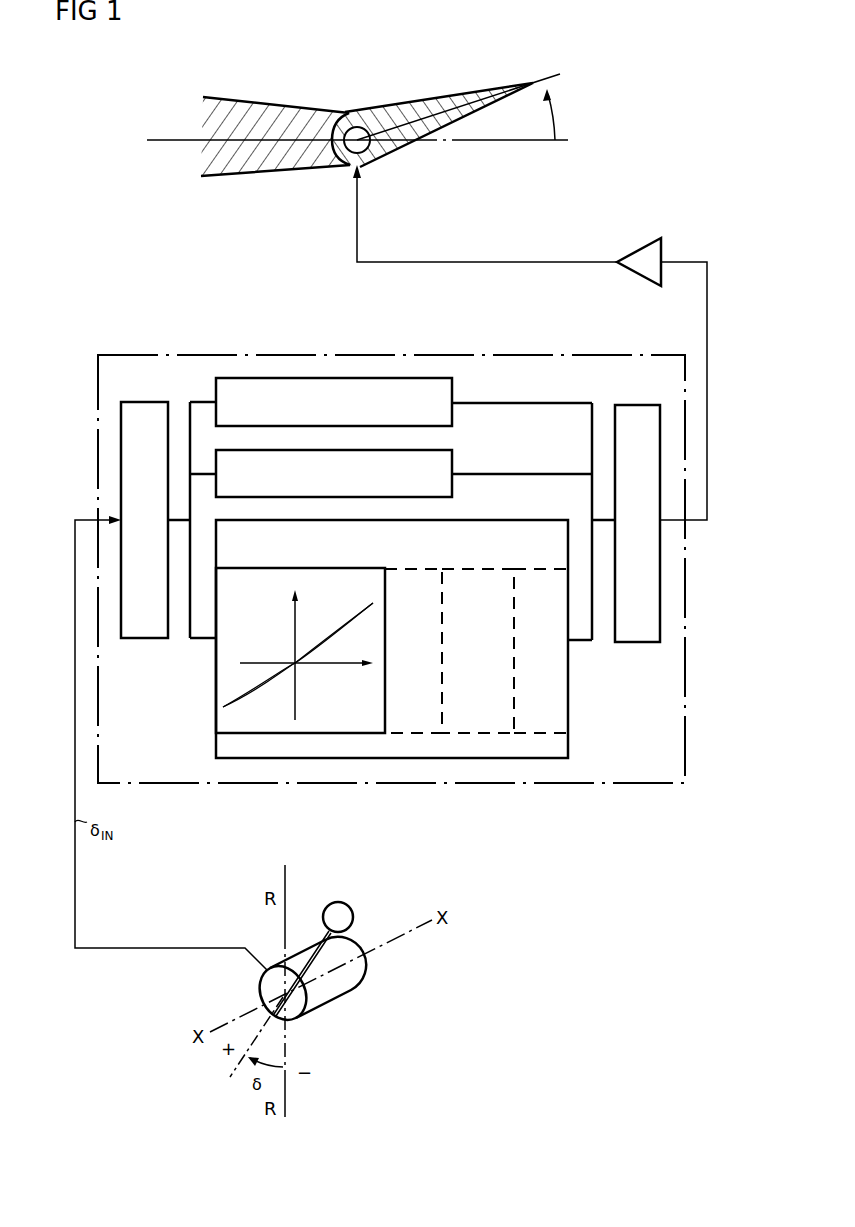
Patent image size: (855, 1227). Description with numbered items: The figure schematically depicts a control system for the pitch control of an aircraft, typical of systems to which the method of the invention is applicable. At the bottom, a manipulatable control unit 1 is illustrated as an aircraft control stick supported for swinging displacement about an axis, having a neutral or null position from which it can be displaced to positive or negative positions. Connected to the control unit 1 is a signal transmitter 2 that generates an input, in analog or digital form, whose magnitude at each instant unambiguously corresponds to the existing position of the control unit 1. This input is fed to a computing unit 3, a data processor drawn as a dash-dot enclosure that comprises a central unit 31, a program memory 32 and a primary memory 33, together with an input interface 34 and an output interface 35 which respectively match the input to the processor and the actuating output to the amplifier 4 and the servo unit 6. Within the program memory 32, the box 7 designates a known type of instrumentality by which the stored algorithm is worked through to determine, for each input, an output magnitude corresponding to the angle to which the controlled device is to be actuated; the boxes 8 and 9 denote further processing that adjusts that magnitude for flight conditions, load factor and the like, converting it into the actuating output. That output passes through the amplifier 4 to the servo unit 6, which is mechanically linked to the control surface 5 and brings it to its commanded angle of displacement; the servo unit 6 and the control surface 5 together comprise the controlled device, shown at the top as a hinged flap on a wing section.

The control unit 1 is at (342, 913).
The signal transmitter 2 is at (320, 998).
The computing unit 3 is at (235, 355).
The amplifier 4 is at (638, 247).
The control surface 5 is at (348, 130).
The servo unit 6 is at (357, 140).
The box designating algorithm instrumentality 7 is at (347, 728).
The further processing box 8 is at (432, 718).
The further processing box 9 is at (500, 713).
The central unit 31 is at (455, 462).
The program memory 32 is at (507, 537).
The primary memory 33 is at (453, 387).
The input interface 34 is at (143, 630).
The output interface 35 is at (633, 634).